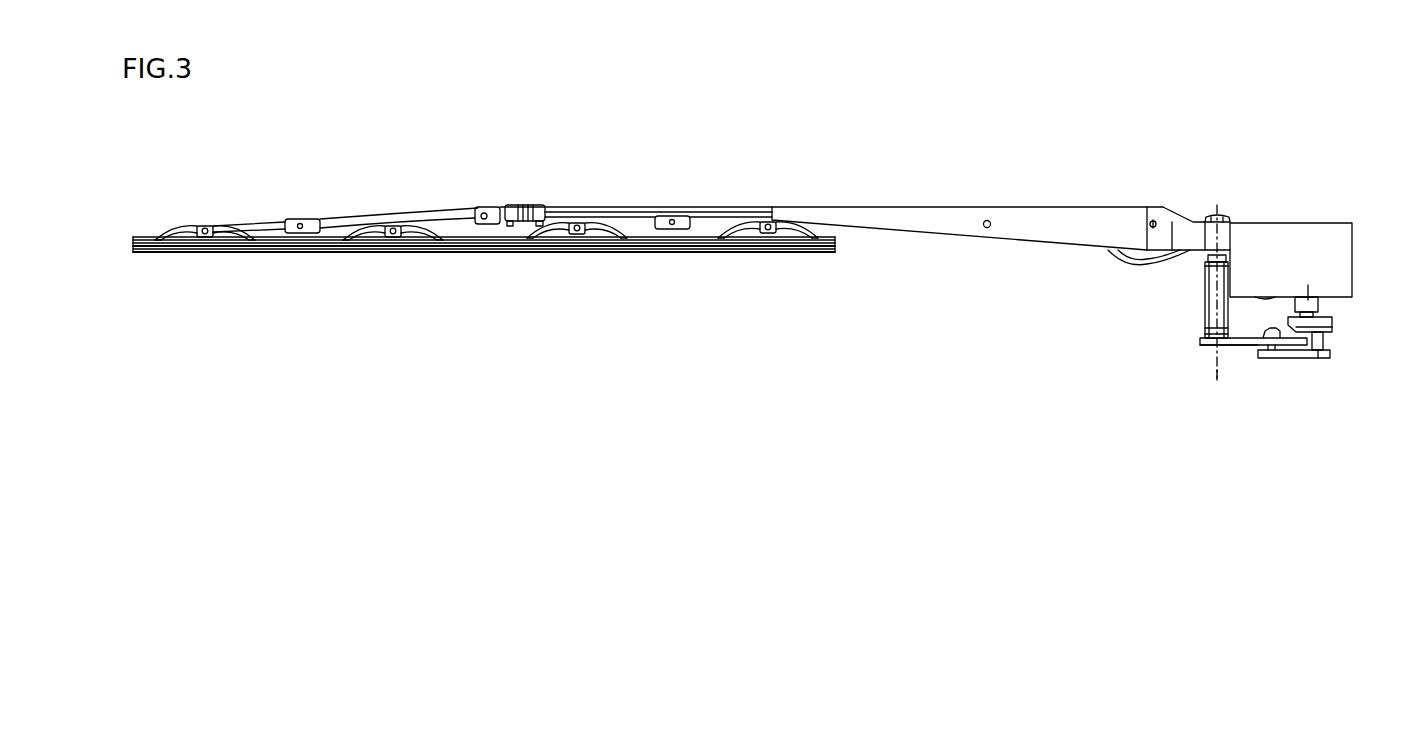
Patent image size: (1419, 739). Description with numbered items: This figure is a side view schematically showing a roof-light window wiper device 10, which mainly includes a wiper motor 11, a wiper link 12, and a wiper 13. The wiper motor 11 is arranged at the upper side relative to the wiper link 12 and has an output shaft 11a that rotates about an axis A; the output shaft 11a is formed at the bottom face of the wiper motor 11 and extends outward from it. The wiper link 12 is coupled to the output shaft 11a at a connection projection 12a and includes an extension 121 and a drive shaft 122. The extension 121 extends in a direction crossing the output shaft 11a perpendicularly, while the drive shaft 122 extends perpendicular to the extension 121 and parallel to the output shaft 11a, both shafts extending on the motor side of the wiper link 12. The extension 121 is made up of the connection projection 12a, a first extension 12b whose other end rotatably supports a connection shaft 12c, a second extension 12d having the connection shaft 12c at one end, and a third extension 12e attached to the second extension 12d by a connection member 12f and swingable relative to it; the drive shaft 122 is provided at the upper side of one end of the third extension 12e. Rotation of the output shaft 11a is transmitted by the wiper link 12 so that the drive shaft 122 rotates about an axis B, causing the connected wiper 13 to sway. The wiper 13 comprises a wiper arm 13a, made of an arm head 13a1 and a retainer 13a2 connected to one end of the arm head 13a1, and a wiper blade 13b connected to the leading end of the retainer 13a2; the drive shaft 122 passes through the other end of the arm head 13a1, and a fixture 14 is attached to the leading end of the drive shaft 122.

The roof-light window wiper device 10 is at (899, 138).
The wiper motor 11 is at (1289, 236).
The output shaft 11a is at (1310, 302).
The wiper link 12 is at (1143, 296).
The extension 121 is at (1240, 340).
The drive shaft 122 is at (1205, 316).
The connection projection 12a is at (1332, 322).
The first extension 12b is at (1323, 336).
The connection shaft 12c is at (1318, 358).
The second extension 12d is at (1295, 358).
The third extension 12e is at (1247, 345).
The connection member 12f is at (1270, 358).
The wiper 13 is at (1053, 226).
The wiper arm 13a is at (1010, 206).
The arm head 13a1 is at (1178, 216).
The retainer 13a2 is at (1088, 207).
The wiper blade 13b is at (487, 252).
The fixture 14 is at (1217, 218).
The axis A is at (1316, 282).
The axis B is at (1207, 385).